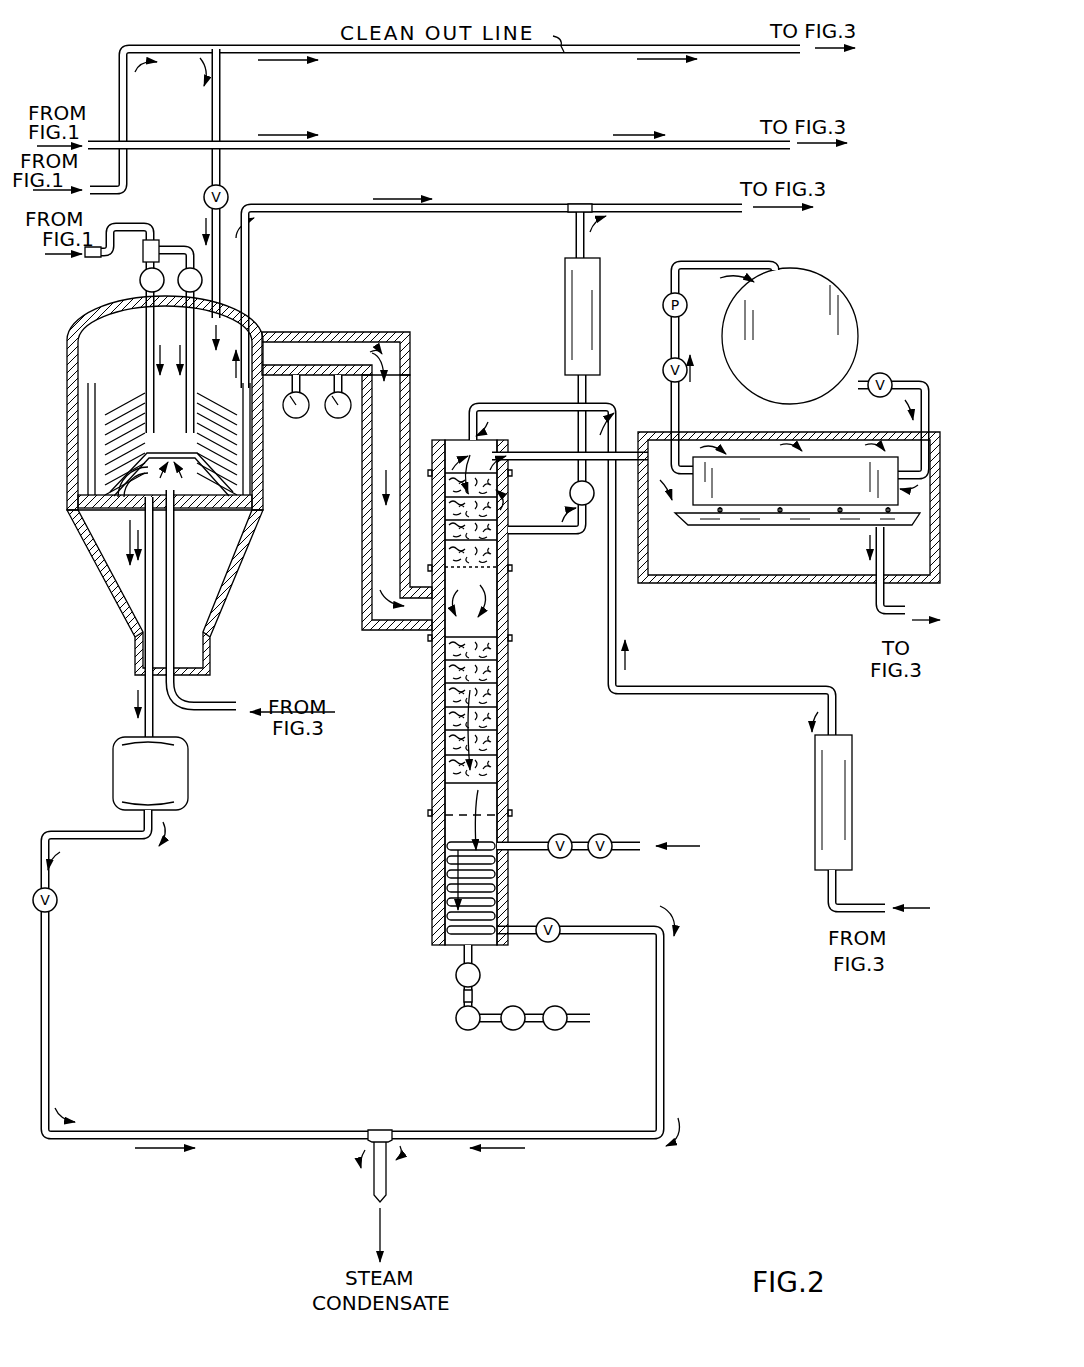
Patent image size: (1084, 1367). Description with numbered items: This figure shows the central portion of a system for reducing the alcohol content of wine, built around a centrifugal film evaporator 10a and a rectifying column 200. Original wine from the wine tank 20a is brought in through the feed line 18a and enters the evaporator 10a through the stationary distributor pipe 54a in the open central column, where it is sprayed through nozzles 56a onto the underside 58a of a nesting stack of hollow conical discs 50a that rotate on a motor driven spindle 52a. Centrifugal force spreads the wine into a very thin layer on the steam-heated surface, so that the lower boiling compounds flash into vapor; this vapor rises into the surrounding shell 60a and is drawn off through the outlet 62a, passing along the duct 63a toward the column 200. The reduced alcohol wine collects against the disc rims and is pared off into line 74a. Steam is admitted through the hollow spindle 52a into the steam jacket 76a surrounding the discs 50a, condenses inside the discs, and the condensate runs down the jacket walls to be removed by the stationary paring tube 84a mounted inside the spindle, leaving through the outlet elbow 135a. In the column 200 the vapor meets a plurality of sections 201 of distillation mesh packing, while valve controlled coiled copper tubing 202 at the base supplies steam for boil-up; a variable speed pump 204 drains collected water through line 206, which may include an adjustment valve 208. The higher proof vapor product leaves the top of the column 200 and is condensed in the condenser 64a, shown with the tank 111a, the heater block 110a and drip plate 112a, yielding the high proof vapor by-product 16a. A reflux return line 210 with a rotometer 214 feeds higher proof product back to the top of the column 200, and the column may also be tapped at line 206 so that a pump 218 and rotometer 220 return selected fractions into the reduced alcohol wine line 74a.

The centrifugal film evaporator 10a is at (265, 542).
The vapor by-product 16a is at (729, 526).
The original feed wine inlet line 18a is at (105, 262).
The original wine tank 20a is at (564, 146).
The hollow conical discs 50a is at (125, 390).
The spindle 52a is at (207, 506).
The stationary distributor pipe 54a is at (187, 238).
The nozzles 56a is at (240, 426).
The underside of the conical discs 58a is at (240, 456).
The surrounding shell 60a is at (262, 314).
The outlet 62a is at (373, 332).
The transfer line 63a is at (532, 454).
The condenser 64a is at (746, 598).
The line 74a is at (248, 306).
The steam jacket 76a is at (260, 486).
The stationary paring tube 84a is at (148, 589).
The heater block 110a is at (800, 496).
The tank 111a is at (801, 345).
The drip plate 112a is at (812, 522).
The outlet elbow 135a is at (240, 684).
The column 200 is at (515, 735).
The sections of distillation mesh packing material 201 is at (452, 694).
The coiled copper tubing 202 is at (442, 900).
The variable speed pump 204 is at (465, 1033).
The line 206 is at (538, 534).
The adjustment valve 208 is at (484, 977).
The reflux return line 210 is at (519, 406).
The rotometer 214 is at (822, 830).
The pump 218 is at (566, 512).
The rotometer 220 is at (572, 332).